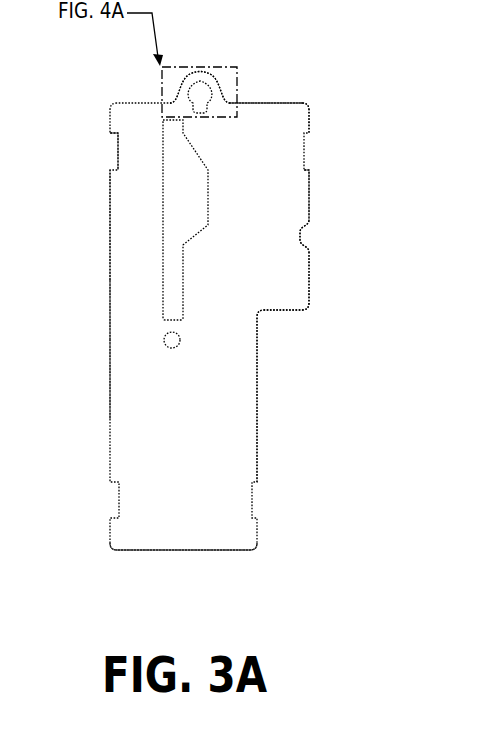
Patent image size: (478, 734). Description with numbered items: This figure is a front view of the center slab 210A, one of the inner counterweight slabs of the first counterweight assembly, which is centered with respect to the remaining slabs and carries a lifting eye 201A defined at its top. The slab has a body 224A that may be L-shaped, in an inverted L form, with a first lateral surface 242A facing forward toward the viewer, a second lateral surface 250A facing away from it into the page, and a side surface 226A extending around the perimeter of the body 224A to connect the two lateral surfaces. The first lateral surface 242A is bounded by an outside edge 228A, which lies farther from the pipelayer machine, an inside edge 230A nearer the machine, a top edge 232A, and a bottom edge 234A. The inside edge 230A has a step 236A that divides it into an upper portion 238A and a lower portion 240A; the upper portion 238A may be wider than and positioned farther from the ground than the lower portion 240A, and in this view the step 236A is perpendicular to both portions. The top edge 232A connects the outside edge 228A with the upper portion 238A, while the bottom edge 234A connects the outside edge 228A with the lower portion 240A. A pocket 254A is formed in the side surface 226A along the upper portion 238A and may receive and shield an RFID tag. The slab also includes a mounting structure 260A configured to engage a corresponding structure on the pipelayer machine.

The center slab 210A is at (133, 63).
The lifting eye 201A is at (200, 72).
The top edge 232A is at (252, 102).
The inside edge 230A is at (310, 120).
The first lateral surface 242A is at (134, 116).
The mounting structure 260A is at (181, 166).
The body 224A is at (110, 205).
The upper portion 238A is at (310, 193).
The pocket 254A is at (301, 236).
The second lateral surface 250A is at (312, 260).
The side surface 226A is at (110, 312).
The outside edge 228A is at (110, 363).
The step 236A is at (284, 311).
The lower portion 240A is at (258, 432).
The bottom edge 234A is at (130, 551).